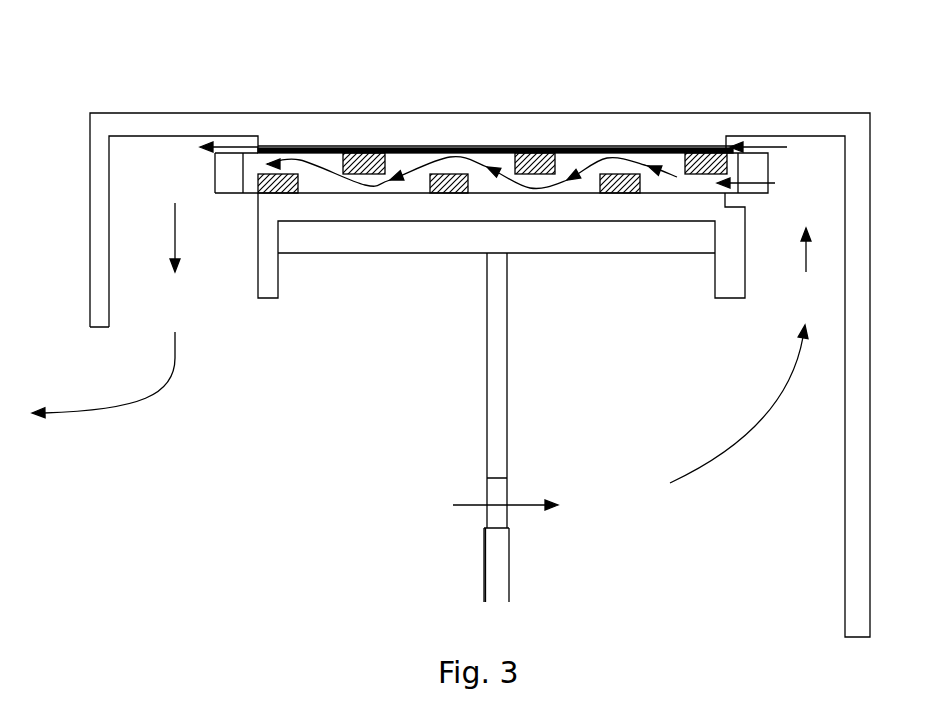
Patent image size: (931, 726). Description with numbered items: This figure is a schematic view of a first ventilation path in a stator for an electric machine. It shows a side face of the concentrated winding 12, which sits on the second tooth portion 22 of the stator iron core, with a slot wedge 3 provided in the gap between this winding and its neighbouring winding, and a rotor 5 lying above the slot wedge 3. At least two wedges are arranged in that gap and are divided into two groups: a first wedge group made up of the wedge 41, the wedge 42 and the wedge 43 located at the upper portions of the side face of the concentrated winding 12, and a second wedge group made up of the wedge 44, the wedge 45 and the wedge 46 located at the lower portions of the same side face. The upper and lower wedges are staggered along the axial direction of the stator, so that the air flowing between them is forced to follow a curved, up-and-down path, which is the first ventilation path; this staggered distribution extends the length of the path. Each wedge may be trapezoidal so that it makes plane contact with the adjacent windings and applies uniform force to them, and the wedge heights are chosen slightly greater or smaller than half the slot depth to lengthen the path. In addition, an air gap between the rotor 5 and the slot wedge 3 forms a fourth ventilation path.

The rotor 5 is at (232, 127).
The slot wedge 3 is at (310, 148).
The concentrated winding 12 is at (417, 160).
The second tooth portion of the stator iron core 22 is at (390, 210).
The wedge 41 is at (365, 153).
The wedge 42 is at (525, 153).
The wedge 43 is at (695, 152).
The wedge 44 is at (262, 193).
The wedge 45 is at (438, 193).
The wedge 46 is at (623, 193).